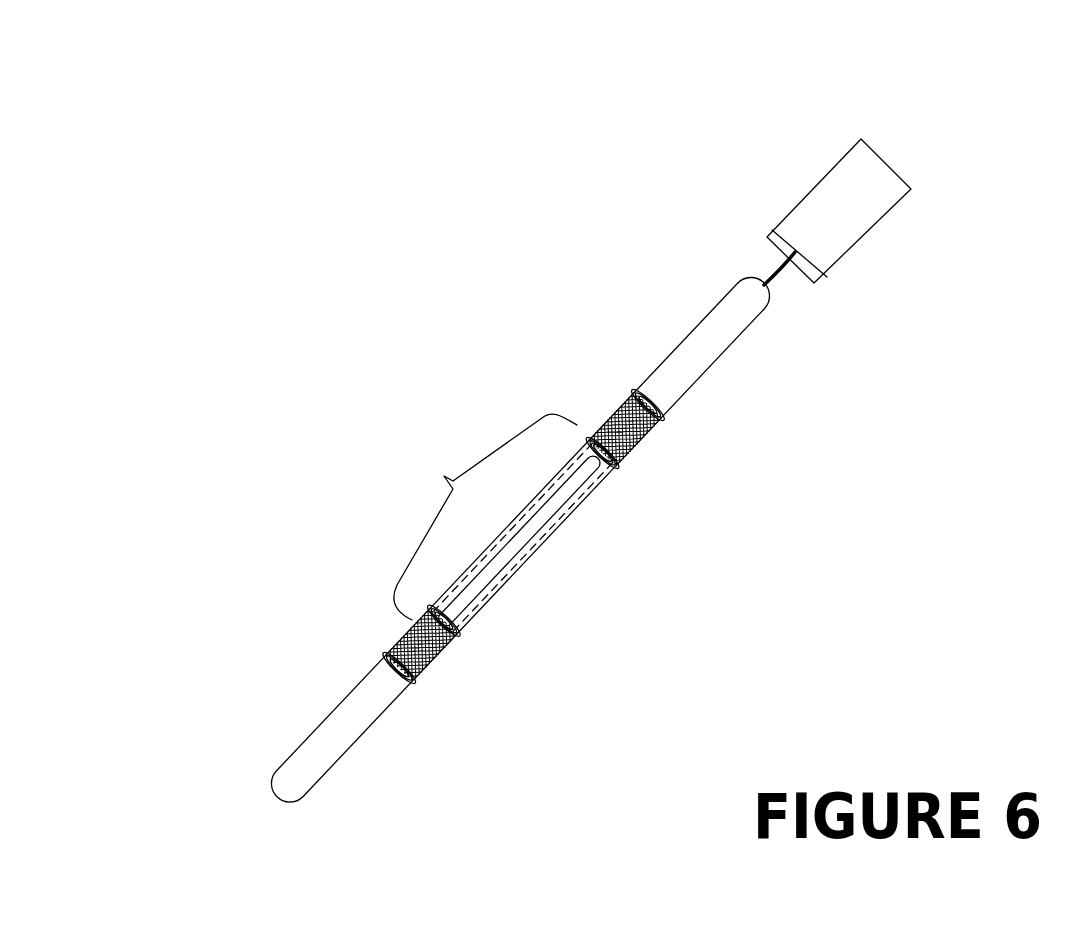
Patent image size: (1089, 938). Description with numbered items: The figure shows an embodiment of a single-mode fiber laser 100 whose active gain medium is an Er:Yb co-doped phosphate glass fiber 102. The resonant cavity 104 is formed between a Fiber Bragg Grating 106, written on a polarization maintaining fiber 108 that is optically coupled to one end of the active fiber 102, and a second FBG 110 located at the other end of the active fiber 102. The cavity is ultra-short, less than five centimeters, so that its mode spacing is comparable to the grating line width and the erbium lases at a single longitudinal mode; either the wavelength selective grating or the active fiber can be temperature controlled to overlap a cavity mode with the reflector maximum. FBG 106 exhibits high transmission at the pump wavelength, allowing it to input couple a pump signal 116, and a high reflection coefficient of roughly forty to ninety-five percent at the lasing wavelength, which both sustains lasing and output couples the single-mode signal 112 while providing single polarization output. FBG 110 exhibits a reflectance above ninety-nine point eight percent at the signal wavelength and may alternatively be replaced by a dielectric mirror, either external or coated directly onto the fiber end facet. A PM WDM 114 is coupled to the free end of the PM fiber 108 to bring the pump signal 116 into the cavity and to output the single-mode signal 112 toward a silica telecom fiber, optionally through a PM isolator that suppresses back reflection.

The single-mode fiber laser 100 is at (430, 269).
The Er:Yb co-doped phosphate glass fiber 102 is at (532, 540).
The resonant cavity 104 is at (484, 517).
The Fiber Bragg Grating 106 is at (630, 450).
The polarization maintaining fiber 108 is at (712, 342).
The second FBG 110 is at (440, 652).
The single-mode signal 112 is at (897, 167).
The PM WDM 114 is at (824, 197).
The pump signal 116 is at (892, 144).